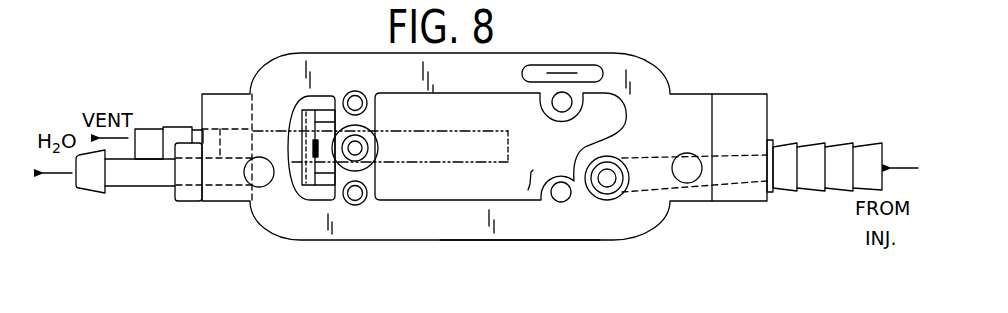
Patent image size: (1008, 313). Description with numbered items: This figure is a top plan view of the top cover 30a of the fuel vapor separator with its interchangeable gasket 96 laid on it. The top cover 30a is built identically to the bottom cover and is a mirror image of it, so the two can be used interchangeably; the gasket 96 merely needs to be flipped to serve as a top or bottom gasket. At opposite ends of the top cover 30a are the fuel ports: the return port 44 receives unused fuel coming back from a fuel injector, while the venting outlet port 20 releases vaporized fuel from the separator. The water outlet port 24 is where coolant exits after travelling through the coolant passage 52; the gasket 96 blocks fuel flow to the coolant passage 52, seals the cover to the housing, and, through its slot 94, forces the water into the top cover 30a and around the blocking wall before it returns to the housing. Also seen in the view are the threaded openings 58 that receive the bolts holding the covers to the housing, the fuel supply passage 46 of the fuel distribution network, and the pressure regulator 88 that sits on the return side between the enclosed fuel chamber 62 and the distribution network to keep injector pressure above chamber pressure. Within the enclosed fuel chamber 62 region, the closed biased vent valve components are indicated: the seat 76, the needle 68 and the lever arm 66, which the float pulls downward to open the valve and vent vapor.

The venting outlet port 20 is at (147, 140).
The water outlet port 24 is at (88, 187).
The top cover 30a is at (447, 243).
The return port 44 is at (872, 147).
The fuel supply passage 46 is at (687, 173).
The coolant passage 52 is at (260, 176).
The openings 58 is at (354, 96).
The enclosed fuel chamber 62 is at (523, 175).
The lever arm 66 is at (472, 131).
The needle 68 is at (383, 146).
The seat 76 is at (368, 141).
The pressure regulator 88 is at (606, 188).
The slot 94 is at (587, 70).
The gasket 96 is at (517, 223).